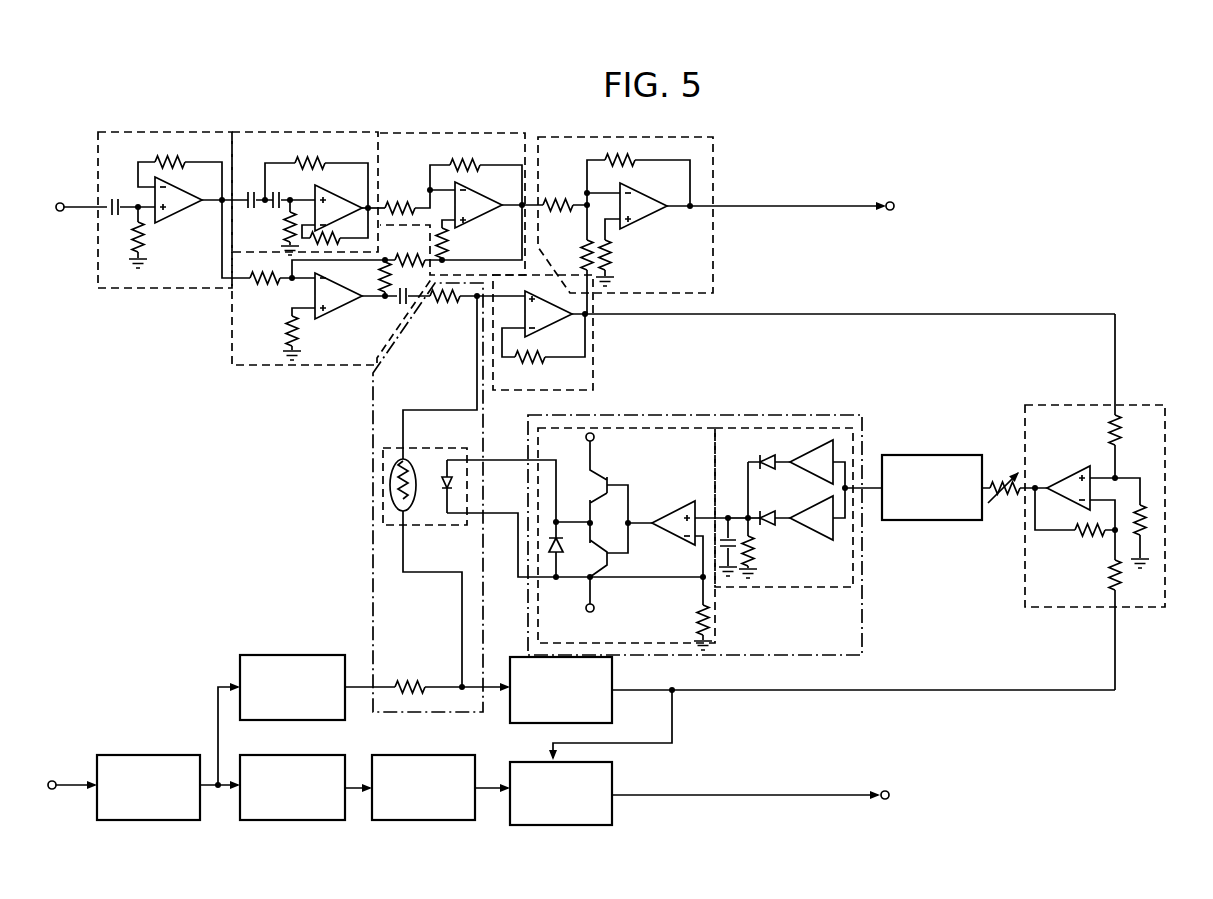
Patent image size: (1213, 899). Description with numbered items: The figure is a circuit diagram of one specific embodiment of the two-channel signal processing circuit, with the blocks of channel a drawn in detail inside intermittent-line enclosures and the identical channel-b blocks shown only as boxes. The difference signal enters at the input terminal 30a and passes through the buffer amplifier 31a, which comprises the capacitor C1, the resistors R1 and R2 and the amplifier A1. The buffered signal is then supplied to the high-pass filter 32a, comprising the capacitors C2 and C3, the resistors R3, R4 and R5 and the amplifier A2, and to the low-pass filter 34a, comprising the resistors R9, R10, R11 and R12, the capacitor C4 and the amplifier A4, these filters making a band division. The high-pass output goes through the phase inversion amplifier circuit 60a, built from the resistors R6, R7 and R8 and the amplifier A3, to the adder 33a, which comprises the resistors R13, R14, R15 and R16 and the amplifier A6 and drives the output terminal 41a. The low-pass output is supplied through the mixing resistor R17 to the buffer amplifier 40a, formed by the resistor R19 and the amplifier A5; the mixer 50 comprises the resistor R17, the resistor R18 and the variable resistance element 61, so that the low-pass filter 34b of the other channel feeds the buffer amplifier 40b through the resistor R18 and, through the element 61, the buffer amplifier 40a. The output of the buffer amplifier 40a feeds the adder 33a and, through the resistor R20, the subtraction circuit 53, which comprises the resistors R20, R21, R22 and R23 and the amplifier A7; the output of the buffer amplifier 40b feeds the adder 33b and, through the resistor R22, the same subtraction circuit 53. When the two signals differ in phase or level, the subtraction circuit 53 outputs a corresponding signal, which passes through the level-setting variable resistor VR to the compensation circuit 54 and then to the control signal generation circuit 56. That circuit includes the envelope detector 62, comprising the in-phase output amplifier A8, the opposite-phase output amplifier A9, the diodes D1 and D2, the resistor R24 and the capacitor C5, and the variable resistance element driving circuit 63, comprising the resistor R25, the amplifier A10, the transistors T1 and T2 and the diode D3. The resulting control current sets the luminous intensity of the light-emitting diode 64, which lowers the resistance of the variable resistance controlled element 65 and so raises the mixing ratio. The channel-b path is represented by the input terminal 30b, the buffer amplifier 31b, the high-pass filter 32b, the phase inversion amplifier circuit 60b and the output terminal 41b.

The input terminal 30a is at (61, 203).
The buffer amplifier 31a is at (128, 131).
The high-pass filter 32a is at (258, 134).
The phase inversion amplifier circuit 60a is at (398, 134).
The adder 33a is at (552, 135).
The low-pass filter 34a is at (234, 366).
The buffer amplifier 40a is at (593, 335).
The output terminal 41a is at (889, 201).
The mixer 50 is at (372, 425).
The variable resistance element 61 is at (378, 506).
The light-emitting diode 64 is at (436, 492).
The variable resistance controlled element 65 is at (414, 463).
The variable resistance element driving circuit 63 is at (639, 428).
The envelope detector 62 is at (744, 428).
The control signal generation circuit 56 is at (862, 590).
The compensation circuit 54 is at (930, 455).
The subtraction circuit 53 is at (1044, 405).
The variable resistor VR is at (1014, 502).
The capacitor C1 is at (131, 195).
The capacitor C2 is at (256, 190).
The capacitor C3 is at (294, 190).
The capacitor C4 is at (403, 307).
The capacitor C5 is at (730, 533).
The resistor R1 is at (127, 236).
The resistor R2 is at (180, 162).
The resistor R3 is at (316, 174).
The resistor R4 is at (287, 222).
The resistor R5 is at (335, 226).
The resistor R6 is at (420, 198).
The resistor R7 is at (476, 172).
The resistor R8 is at (455, 241).
The resistor R9 is at (268, 253).
The resistor R10 is at (341, 278).
The resistor R11 is at (285, 334).
The resistor R12 is at (453, 235).
The resistor R13 is at (581, 195).
The resistor R14 is at (570, 259).
The resistor R15 is at (634, 164).
The resistor R16 is at (622, 252).
The mixing resistor R17 is at (464, 374).
The resistor R18 is at (427, 675).
The resistor R19 is at (543, 350).
The resistor R20 is at (1133, 397).
The resistor R21 is at (1144, 504).
The resistor R22 is at (1100, 595).
The resistor R23 is at (1076, 522).
The resistor R24 is at (763, 546).
The resistor R25 is at (720, 613).
The amplifier A1 is at (174, 212).
The amplifier A2 is at (350, 203).
The amplifier A3 is at (483, 218).
The amplifier A4 is at (343, 312).
The amplifier A5 is at (544, 328).
The amplifier A6 is at (645, 218).
The amplifier A7 is at (1060, 475).
The in-phase output amplifier A8 is at (817, 469).
The opposite-phase output amplifier A9 is at (795, 529).
The amplifier A10 is at (664, 518).
The diode D1 is at (769, 476).
The diode D2 is at (772, 507).
The diode D3 is at (570, 549).
The transistor T1 is at (606, 480).
The transistor T2 is at (608, 548).
The input terminal 30b is at (54, 781).
The buffer amplifier 31b is at (156, 755).
The high-pass filter 32b is at (272, 755).
The phase inversion amplifier circuit 60b is at (438, 755).
The low-pass filter 34b is at (312, 655).
The adder 33b is at (614, 772).
The buffer amplifier 40b is at (612, 705).
The output terminal 41b is at (885, 791).